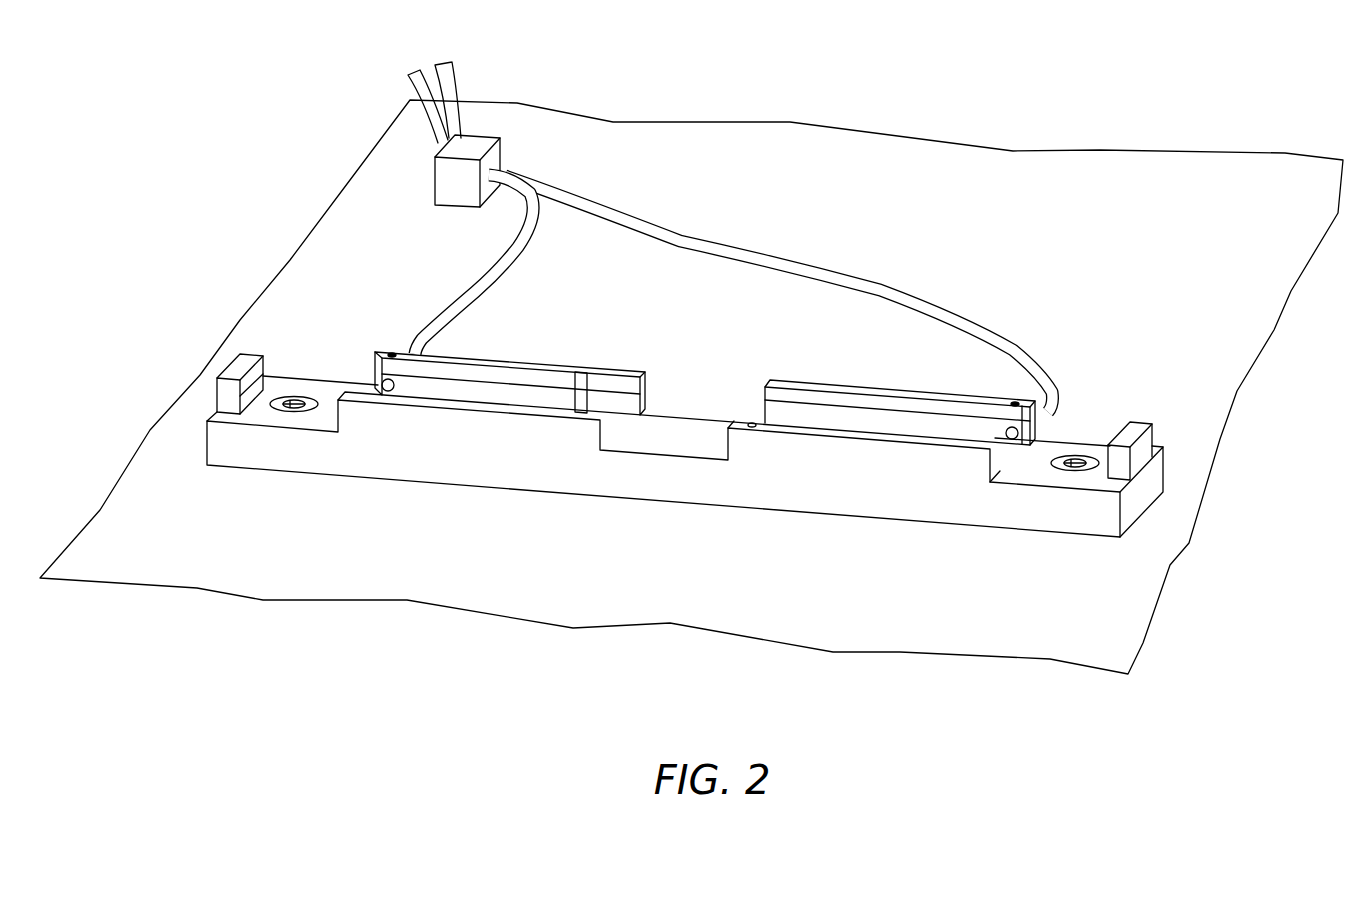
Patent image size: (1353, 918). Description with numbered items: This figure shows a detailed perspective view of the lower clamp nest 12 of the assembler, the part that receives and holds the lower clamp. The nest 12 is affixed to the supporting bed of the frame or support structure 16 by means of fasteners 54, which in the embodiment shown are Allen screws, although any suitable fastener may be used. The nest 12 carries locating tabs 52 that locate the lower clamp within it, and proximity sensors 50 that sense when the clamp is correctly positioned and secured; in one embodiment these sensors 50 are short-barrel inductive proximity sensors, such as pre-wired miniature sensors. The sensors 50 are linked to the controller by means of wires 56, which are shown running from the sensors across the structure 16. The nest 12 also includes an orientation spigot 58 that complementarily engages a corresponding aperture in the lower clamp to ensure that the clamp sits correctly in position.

The lower clamp nest 12 is at (433, 458).
The frame or support structure 16 is at (470, 598).
The proximity sensors 50 is at (385, 380).
The locating tabs 52 is at (237, 363).
The fasteners 54 is at (273, 410).
The wires 56 is at (452, 297).
The orientation spigot 58 is at (590, 368).